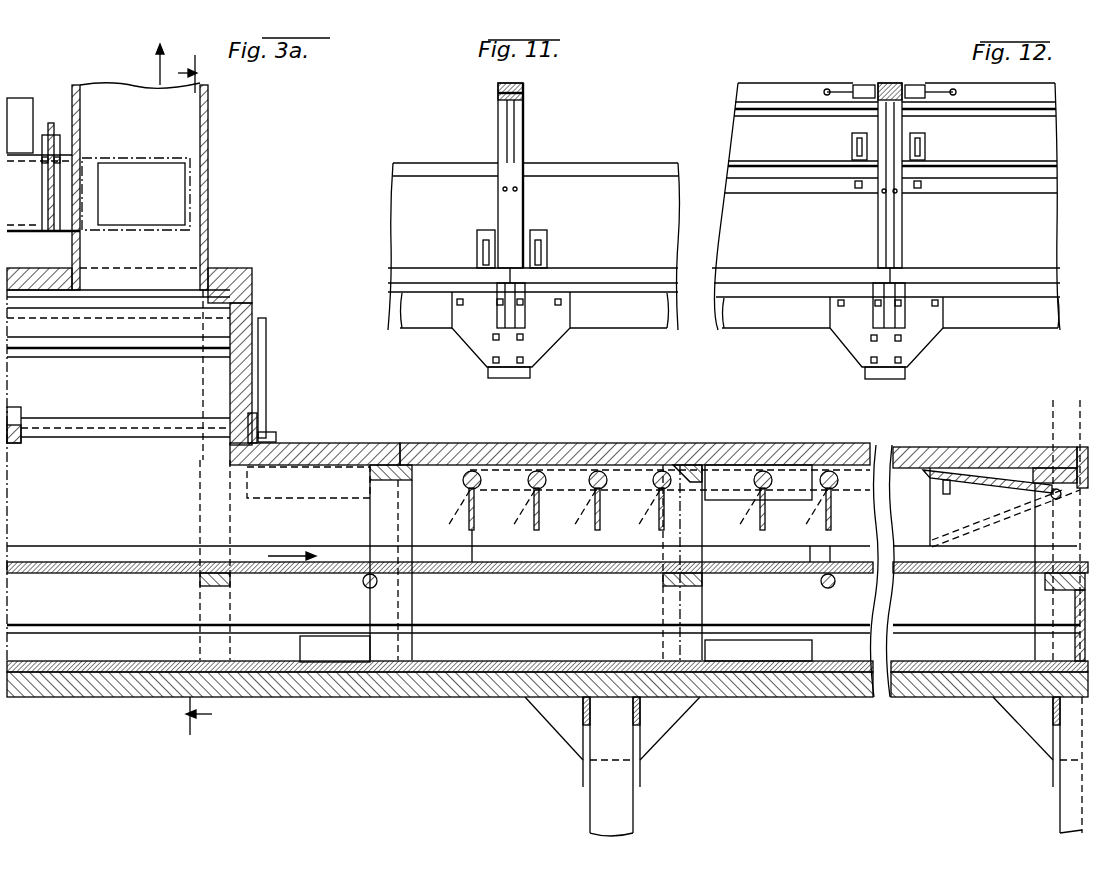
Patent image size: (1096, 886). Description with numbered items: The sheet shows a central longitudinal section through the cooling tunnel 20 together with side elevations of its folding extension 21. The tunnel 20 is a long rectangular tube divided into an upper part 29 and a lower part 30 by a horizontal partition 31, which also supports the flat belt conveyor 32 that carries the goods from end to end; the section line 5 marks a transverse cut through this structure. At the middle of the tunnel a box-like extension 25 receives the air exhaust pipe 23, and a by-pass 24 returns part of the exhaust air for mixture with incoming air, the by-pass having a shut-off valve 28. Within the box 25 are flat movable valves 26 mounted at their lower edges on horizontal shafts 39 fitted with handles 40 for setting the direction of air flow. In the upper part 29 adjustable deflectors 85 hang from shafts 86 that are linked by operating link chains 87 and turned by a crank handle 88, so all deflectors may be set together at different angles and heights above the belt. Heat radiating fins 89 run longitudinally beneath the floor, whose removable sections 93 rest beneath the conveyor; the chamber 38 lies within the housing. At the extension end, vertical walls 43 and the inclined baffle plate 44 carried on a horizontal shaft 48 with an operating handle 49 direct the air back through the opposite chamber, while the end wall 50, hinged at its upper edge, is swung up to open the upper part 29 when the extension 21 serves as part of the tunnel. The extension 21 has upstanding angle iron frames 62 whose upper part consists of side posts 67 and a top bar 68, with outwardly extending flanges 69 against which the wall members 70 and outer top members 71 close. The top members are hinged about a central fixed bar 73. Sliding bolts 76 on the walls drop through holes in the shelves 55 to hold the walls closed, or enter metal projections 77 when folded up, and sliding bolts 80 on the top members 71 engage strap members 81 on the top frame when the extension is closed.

In FIG. 3A, the section line 5 is at (184, 394).
In FIG. 3A, the tunnel 20 is at (760, 445).
In FIG. 11, the extension 21 is at (628, 333).
In FIG. 12, the extension 21 is at (796, 335).
In FIG. 3A, the air exhaust pipe 23 is at (208, 131).
In FIG. 3A, the by-pass 24 is at (73, 153).
In FIG. 3A, the box-like extension 25 is at (253, 302).
In FIG. 3A, the movable valves 26 is at (118, 475).
In FIG. 3A, the shut-off valve 28 is at (50, 123).
In FIG. 3A, the upper part 29 is at (432, 480).
In FIG. 3A, the lower part 30 is at (443, 634).
In FIG. 3A, the horizontal partition 31 is at (333, 574).
In FIG. 3A, the flat belt conveyor 32 is at (323, 562).
In FIG. 3A, the housing chamber 38 is at (174, 560).
In FIG. 3A, the horizontal shafts 39 is at (276, 436).
In FIG. 3A, the handles 40 is at (267, 378).
In FIG. 3A, the vertical walls 43 is at (975, 542).
In FIG. 3A, the baffle plate 44 is at (992, 478).
In FIG. 3A, the horizontal shaft 48 is at (1058, 490).
In FIG. 3A, the operating handle 49 is at (1038, 568).
In FIG. 3A, the end wall 50 is at (1086, 497).
In FIG. 11, the shelves 55 is at (428, 270).
In FIG. 12, the shelves 55 is at (816, 262).
In FIG. 11, the angle iron frames 62 is at (527, 128).
In FIG. 12, the angle iron frames 62 is at (873, 125).
In FIG. 11, the side posts 67 is at (498, 131).
In FIG. 12, the side posts 67 is at (887, 128).
In FIG. 11, the top bar 68 is at (498, 88).
In FIG. 12, the top bar 68 is at (887, 88).
In FIG. 12, the outwardly extending flanges 69 is at (902, 213).
In FIG. 11, the wall member 70 is at (534, 246).
In FIG. 12, the wall member 70 is at (752, 131).
In FIG. 11, the outer top members 71 is at (416, 170).
In FIG. 12, the outer top members 71 is at (797, 90).
In FIG. 12, the central fixed bar 73 is at (746, 173).
In FIG. 11, the sliding bolts 76 is at (480, 234).
In FIG. 12, the sliding bolts 76 is at (852, 143).
In FIG. 12, the metal projections 77 is at (858, 165).
In FIG. 12, the sliding bolts 80 is at (852, 90).
In FIG. 11, the strap members 81 is at (522, 94).
In FIG. 12, the strap members 81 is at (875, 90).
In FIG. 3A, the adjustable deflectors 85 is at (534, 528).
In FIG. 3A, the shafts 86 is at (474, 480).
In FIG. 3A, the operating link chains 87 is at (568, 478).
In FIG. 3A, the crank handle 88 is at (471, 567).
In FIG. 3A, the heat radiating fins 89 is at (535, 607).
In FIG. 3A, the sections 93 is at (590, 578).